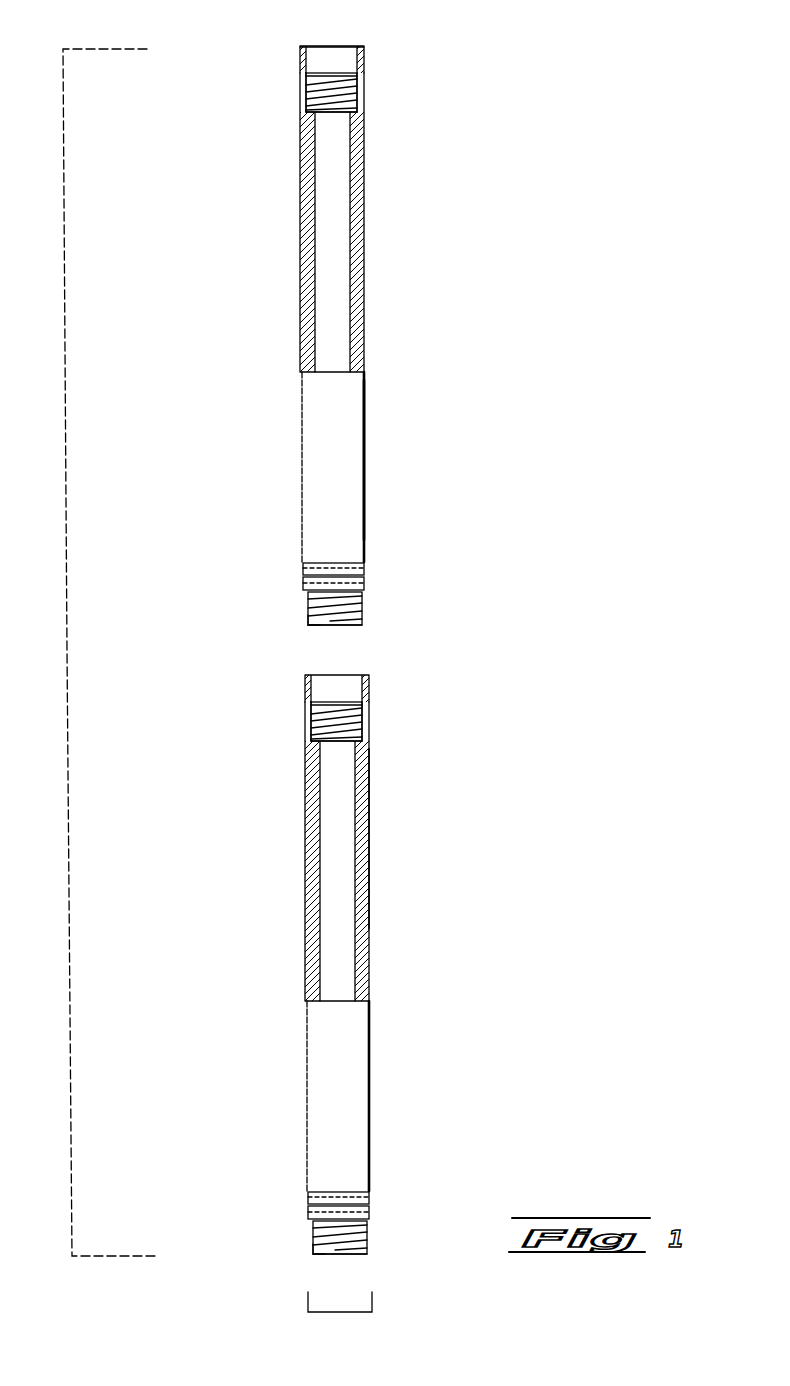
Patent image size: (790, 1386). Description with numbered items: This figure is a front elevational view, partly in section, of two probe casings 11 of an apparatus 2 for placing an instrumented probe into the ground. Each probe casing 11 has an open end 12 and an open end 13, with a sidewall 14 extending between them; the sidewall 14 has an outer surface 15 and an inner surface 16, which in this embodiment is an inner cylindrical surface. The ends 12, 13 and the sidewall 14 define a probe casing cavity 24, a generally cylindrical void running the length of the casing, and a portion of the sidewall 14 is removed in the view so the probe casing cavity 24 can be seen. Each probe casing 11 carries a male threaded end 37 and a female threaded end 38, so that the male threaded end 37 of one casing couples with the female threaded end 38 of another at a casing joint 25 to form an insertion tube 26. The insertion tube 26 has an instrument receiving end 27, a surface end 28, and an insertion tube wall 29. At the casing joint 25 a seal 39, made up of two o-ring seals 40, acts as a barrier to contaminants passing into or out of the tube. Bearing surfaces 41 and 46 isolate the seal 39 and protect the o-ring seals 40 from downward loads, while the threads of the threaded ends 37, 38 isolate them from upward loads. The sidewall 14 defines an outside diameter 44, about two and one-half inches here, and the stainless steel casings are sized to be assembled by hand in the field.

The apparatus 2 is at (498, 487).
The probe casing 11 is at (420, 405).
The end 12 is at (340, 627).
The end 13 is at (316, 46).
The sidewall 14 is at (353, 483).
The outer surface 15 is at (365, 272).
The inner surface 16 is at (352, 195).
The probe casing cavity 24 is at (333, 332).
The casing joint 25 is at (222, 640).
The insertion tube 26 is at (67, 652).
The instrument receiving end 27 is at (330, 1255).
The surface end 28 is at (330, 46).
The insertion tube wall 29 is at (366, 520).
The male threaded end 37 is at (362, 612).
The female threaded end 38 is at (360, 85).
The seal 39 is at (369, 563).
The o-ring seal 40 is at (303, 585).
The bearing surface 41 is at (306, 90).
The outside diameter 44 is at (338, 1312).
The bearing surface 46 is at (318, 626).